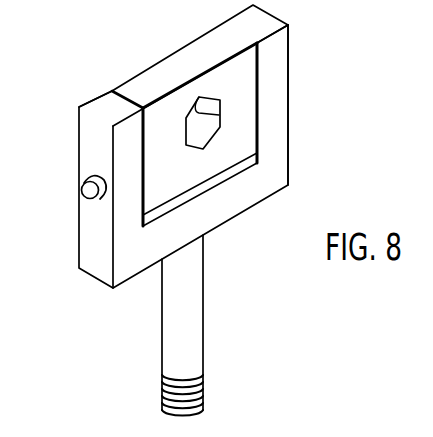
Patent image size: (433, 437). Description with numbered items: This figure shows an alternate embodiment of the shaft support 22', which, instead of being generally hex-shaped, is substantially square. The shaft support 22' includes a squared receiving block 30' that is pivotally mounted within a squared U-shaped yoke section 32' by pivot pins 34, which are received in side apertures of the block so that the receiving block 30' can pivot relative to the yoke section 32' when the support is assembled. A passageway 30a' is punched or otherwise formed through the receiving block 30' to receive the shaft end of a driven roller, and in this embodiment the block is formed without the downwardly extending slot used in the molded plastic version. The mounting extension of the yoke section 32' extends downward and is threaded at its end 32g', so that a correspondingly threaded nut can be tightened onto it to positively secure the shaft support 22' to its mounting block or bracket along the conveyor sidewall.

The shaft support 22' is at (152, 146).
The squared receiving block 30' is at (183, 144).
The passageway 30a' is at (307, 105).
The squared U-shaped yoke section 32' is at (264, 124).
The threaded end 32g' is at (232, 325).
The pivot pins 34 is at (84, 192).